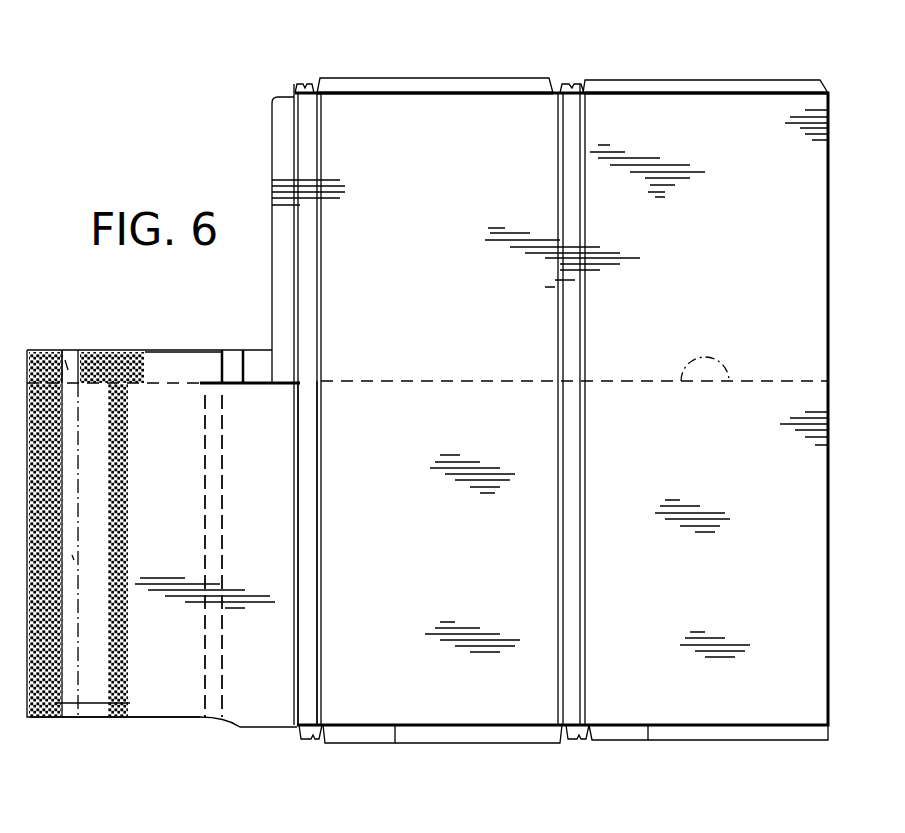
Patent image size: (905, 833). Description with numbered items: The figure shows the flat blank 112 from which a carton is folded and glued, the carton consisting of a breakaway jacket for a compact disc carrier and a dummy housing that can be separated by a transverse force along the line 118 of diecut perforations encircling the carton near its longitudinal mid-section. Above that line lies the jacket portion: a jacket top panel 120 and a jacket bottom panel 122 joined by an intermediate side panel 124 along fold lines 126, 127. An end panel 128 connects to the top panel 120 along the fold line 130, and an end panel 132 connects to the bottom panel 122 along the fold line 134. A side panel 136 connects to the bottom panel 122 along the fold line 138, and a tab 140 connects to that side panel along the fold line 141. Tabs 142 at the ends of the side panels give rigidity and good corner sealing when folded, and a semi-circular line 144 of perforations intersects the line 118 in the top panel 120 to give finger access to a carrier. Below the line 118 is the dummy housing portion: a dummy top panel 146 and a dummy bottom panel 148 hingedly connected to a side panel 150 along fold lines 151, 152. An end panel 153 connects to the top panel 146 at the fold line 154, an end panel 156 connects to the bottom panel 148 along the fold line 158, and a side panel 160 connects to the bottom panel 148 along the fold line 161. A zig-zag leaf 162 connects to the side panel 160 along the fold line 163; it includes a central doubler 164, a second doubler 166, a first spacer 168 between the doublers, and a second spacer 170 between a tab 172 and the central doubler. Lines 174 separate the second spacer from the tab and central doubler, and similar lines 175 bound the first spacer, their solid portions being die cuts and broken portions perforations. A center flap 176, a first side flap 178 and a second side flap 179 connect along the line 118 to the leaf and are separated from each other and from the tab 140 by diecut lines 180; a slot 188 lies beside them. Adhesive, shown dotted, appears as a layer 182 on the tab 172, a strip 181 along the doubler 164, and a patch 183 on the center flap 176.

The blank 112 is at (655, 48).
The line of diecut perforations 118 is at (765, 382).
The jacket top panel 120 is at (660, 244).
The jacket bottom panel 122 is at (407, 274).
The intermediate side panel 124 is at (580, 324).
The fold line 126 is at (580, 130).
The fold line 127 is at (555, 122).
The end panel 128 is at (752, 82).
The fold line 130 is at (711, 94).
The end panel 132 is at (425, 80).
The fold line 134 is at (416, 94).
The side panel 136 is at (310, 124).
The fold line 138 is at (320, 156).
The tab 140 is at (278, 128).
The fold line 141 is at (292, 162).
The tabs 142 is at (301, 84).
The semi-circular line of perforations 144 is at (707, 357).
The dummy top panel 146 is at (687, 592).
The dummy bottom panel 148 is at (417, 574).
The side panel 150 is at (586, 576).
The fold line 151 is at (590, 481).
The fold line 152 is at (560, 438).
The end panel 153 is at (758, 741).
The fold line 154 is at (648, 741).
The bottom flap 156 is at (481, 744).
The fold line 158 is at (395, 744).
The side panel 160 is at (318, 514).
The fold line 161 is at (320, 590).
The zig-zag leaf 162 is at (150, 727).
The fold line 163 is at (298, 452).
The central doubler 164 is at (145, 494).
The second doubler 166 is at (235, 532).
The first spacer 168 is at (218, 560).
The second spacer 170 is at (72, 560).
The tab 172 is at (48, 670).
The lines 174 is at (78, 466).
The lines 175 is at (210, 665).
The center flap 176 is at (162, 350).
The first side flap 178 is at (45, 350).
The second side flap 179 is at (232, 375).
The diecut lines 180 is at (222, 370).
The strip of adhesive 181 is at (120, 529).
The layer of adhesive 182 is at (55, 705).
The patch of adhesive 183 is at (118, 350).
The slot 188 is at (68, 360).